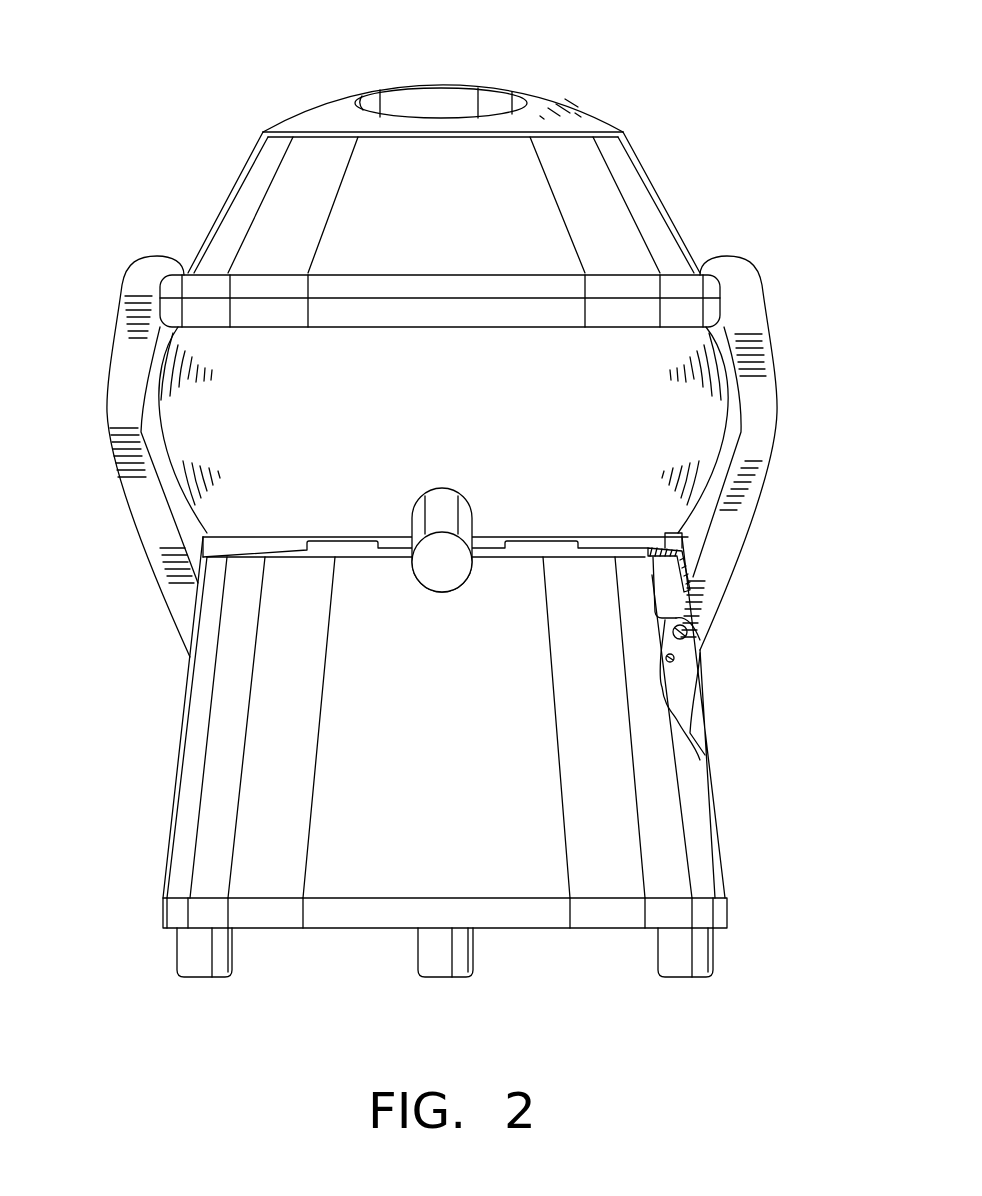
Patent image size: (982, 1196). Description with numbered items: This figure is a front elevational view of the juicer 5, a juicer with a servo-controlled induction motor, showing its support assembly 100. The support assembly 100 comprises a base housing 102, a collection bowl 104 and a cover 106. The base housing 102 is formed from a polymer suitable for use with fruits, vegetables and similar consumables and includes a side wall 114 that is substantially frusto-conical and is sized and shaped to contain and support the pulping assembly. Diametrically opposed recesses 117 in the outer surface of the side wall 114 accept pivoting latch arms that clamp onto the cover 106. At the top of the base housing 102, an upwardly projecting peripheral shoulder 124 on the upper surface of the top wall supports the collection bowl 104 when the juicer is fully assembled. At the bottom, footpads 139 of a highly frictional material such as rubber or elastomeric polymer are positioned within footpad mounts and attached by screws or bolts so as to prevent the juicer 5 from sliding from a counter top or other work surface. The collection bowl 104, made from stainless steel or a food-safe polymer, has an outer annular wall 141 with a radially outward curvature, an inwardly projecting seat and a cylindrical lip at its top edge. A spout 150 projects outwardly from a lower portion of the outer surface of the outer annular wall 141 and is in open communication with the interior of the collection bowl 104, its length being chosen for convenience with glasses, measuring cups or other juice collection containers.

The juicer 5 is at (449, 520).
The support assembly 100 is at (449, 785).
The base housing 102 is at (718, 840).
The collection bowl 104 is at (208, 469).
The cover 106 is at (669, 205).
The side wall 114 is at (465, 802).
The recesses 117 is at (695, 737).
The peripheral shoulder 124 is at (675, 545).
The footpads 139 is at (708, 953).
The outer annular wall 141 is at (712, 422).
The spout 150 is at (458, 494).